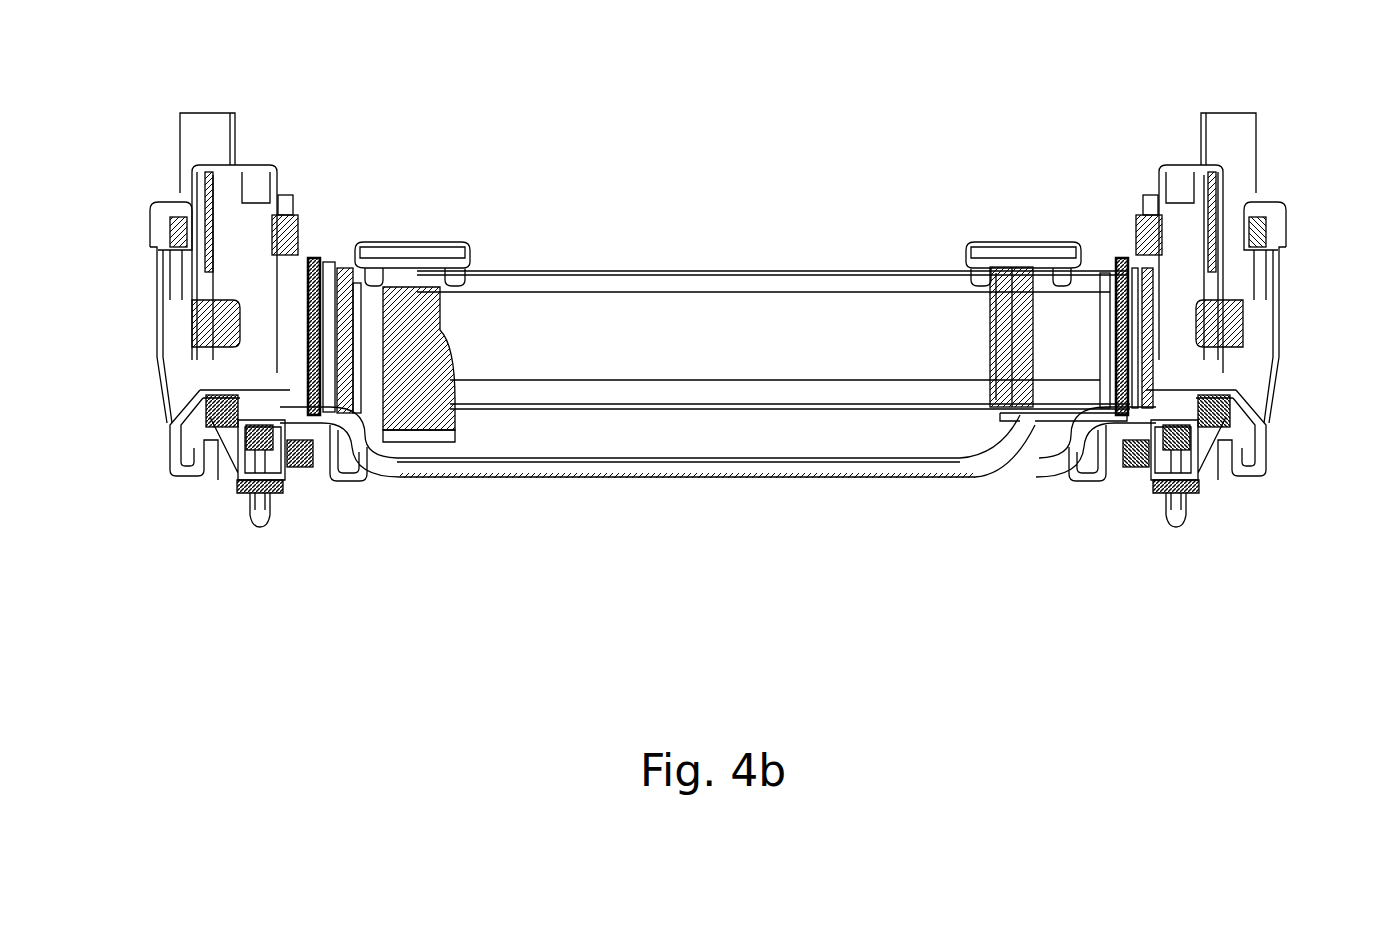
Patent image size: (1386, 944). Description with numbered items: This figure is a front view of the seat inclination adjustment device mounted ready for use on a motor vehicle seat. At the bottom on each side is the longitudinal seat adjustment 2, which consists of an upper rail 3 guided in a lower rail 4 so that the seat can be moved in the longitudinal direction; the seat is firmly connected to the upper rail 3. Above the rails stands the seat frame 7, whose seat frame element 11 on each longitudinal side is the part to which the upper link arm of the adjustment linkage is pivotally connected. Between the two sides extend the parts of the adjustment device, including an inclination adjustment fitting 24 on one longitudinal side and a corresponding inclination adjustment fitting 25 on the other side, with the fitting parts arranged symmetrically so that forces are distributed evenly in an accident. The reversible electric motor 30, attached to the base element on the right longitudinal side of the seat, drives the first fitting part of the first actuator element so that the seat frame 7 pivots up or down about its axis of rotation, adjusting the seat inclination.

The longitudinal seat adjustment 2 is at (152, 510).
The upper rail 3 is at (160, 452).
The lower rail 4 is at (232, 495).
The seat frame 7 is at (150, 273).
The seat frame element 11 is at (717, 269).
The inclination adjustment fitting 24 is at (323, 262).
The inclination adjustment fitting 25 is at (1027, 440).
The electric motor 30 is at (413, 288).